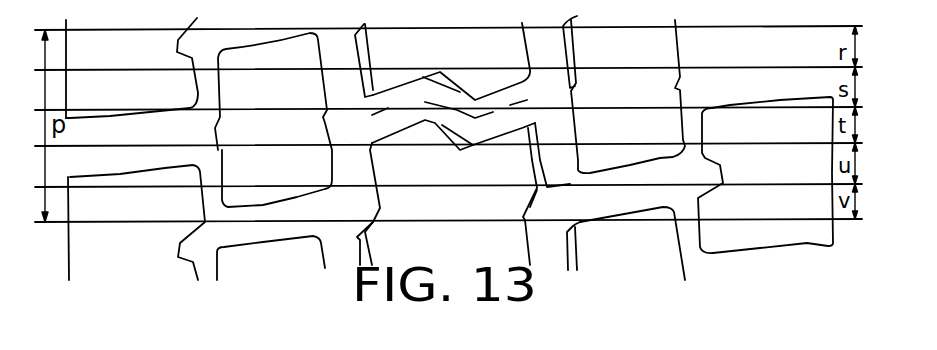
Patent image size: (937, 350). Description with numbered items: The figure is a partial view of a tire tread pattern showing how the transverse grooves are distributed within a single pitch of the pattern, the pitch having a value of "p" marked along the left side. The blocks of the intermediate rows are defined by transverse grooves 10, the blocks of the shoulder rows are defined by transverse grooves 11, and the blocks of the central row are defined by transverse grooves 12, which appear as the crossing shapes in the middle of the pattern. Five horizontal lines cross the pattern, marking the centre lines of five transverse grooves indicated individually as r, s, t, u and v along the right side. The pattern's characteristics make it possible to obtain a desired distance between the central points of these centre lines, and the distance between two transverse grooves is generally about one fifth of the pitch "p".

The transverse grooves 10 is at (262, 224).
The transverse grooves 11 is at (192, 136).
The transverse grooves 12 is at (423, 94).